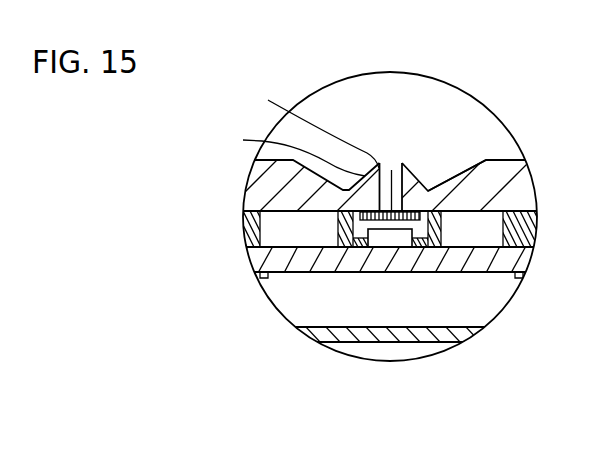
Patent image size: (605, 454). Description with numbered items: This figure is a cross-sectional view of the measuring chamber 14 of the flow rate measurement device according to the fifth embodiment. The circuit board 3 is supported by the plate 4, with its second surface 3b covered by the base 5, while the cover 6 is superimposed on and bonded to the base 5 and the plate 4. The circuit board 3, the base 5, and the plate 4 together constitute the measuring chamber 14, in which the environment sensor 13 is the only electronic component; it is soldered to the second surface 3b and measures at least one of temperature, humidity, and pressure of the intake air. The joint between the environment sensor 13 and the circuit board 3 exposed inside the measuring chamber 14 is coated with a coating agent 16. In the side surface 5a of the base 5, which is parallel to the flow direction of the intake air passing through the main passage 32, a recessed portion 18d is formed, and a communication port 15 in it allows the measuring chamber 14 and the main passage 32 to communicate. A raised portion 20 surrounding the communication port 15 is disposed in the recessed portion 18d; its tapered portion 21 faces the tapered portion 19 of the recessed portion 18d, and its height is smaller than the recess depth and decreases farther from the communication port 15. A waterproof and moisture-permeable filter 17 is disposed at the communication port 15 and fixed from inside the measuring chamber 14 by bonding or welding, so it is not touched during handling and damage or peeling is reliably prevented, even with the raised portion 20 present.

The circuit board 3 is at (458, 262).
The second surface 3b is at (283, 247).
The plate 4 is at (442, 226).
The base 5 is at (492, 178).
The side surface 5a is at (510, 159).
The cover 6 is at (423, 343).
The environment sensor 13 is at (390, 240).
The measuring chamber 14 is at (338, 227).
The communication port 15 is at (382, 185).
The coating agent 16 is at (367, 247).
The waterproof and moisture-permeable filter 17 is at (392, 170).
The recessed portion 18d is at (437, 174).
The tapered portion 19 is at (457, 174).
The raised portion 20 is at (311, 124).
The tapered portion 21 is at (288, 151).
The main passage 32 is at (328, 102).